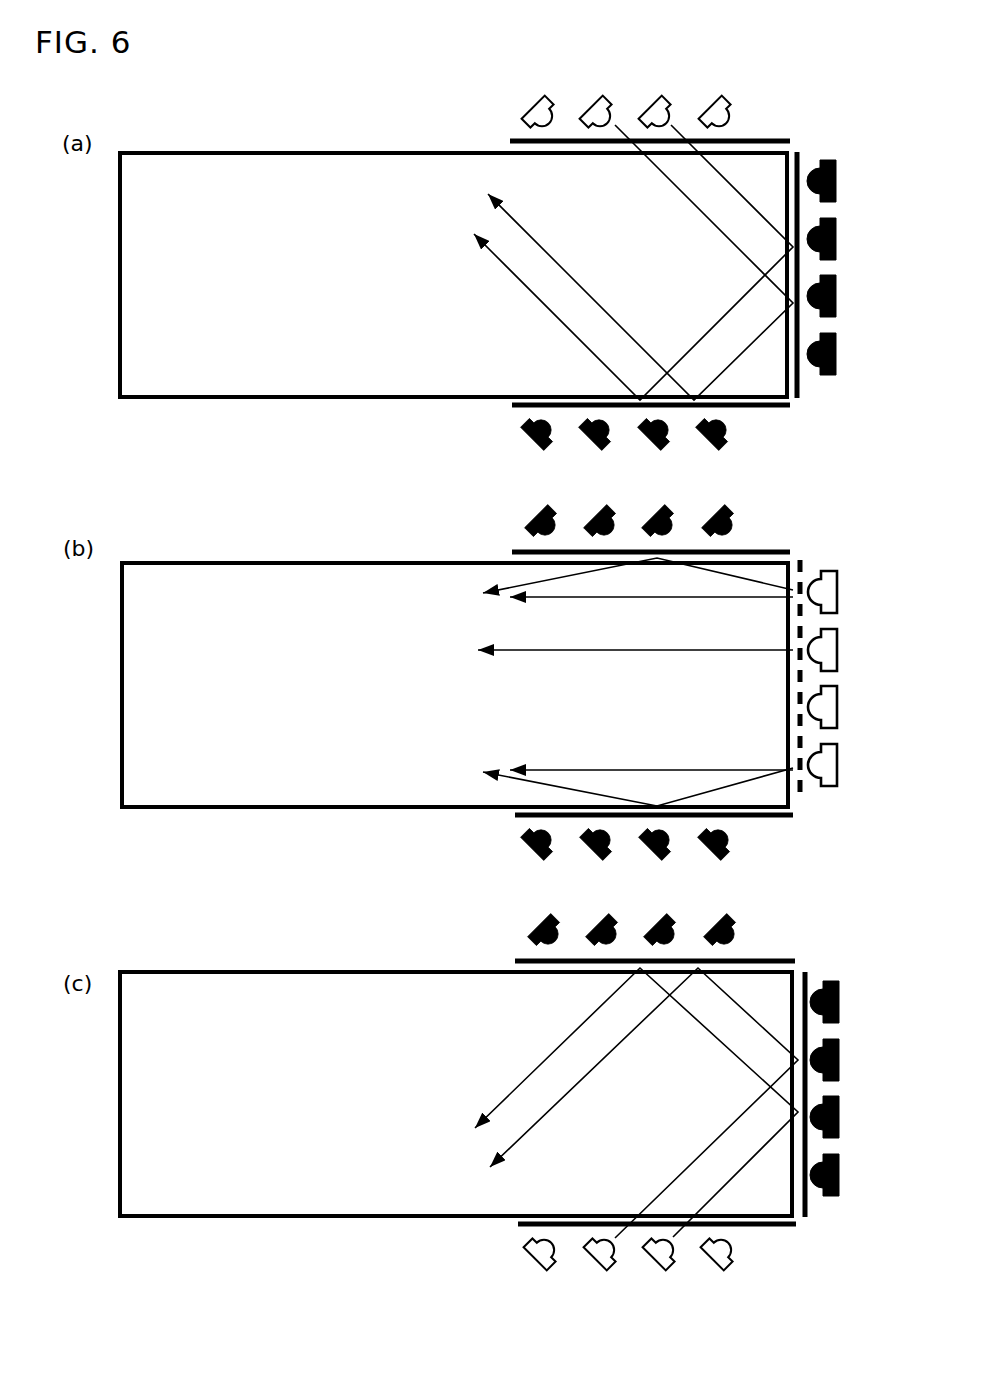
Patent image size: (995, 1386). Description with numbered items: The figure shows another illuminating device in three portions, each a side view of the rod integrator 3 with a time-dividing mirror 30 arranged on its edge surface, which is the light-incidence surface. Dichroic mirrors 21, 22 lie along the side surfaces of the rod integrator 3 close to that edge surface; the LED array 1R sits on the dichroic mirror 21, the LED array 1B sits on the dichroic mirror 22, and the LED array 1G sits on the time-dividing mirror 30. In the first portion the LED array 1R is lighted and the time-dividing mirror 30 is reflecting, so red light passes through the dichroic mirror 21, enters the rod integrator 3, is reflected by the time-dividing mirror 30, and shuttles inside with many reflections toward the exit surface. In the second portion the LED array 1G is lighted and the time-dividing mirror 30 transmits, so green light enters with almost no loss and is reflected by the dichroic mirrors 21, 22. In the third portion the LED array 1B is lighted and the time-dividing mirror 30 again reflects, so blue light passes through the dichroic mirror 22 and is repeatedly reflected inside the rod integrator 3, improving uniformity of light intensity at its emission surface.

The rod integrator 3 is at (325, 397).
The dichroic mirror 21 is at (510, 141).
The dichroic mirror 22 is at (772, 408).
The time-dividing mirror 30 is at (803, 383).
The LED array 1R is at (750, 107).
The LED array 1G is at (838, 160).
The LED array 1B is at (513, 435).